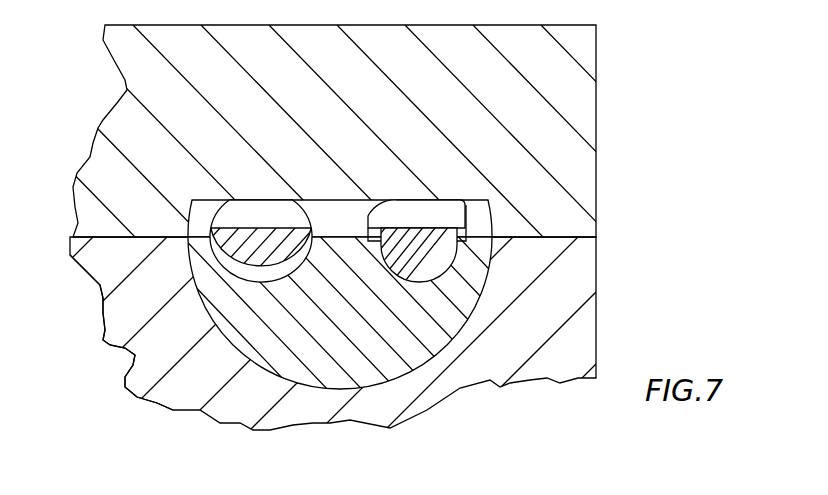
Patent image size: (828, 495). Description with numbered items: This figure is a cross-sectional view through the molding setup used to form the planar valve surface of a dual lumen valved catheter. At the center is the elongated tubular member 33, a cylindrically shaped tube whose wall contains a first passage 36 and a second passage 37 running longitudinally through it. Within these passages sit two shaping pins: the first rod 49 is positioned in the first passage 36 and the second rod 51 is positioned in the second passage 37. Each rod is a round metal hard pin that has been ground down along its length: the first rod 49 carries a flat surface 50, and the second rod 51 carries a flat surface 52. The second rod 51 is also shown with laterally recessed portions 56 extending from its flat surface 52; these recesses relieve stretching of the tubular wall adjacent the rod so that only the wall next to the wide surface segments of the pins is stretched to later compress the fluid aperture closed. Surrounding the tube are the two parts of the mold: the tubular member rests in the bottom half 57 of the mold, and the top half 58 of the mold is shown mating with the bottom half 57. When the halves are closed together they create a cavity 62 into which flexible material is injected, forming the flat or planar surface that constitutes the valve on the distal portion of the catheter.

The elongated tubular member 33 is at (477, 287).
The first passage 36 is at (132, 390).
The second passage 37 is at (410, 278).
The first rod 49 is at (233, 273).
The flat surface 50 is at (247, 200).
The second rod 51 is at (430, 282).
The flat surface 52 is at (408, 226).
The laterally recessed portion 56 is at (466, 226).
The bottom half of the mold 57 is at (598, 342).
The top half of the mold 58 is at (596, 52).
The cavity 62 is at (335, 200).